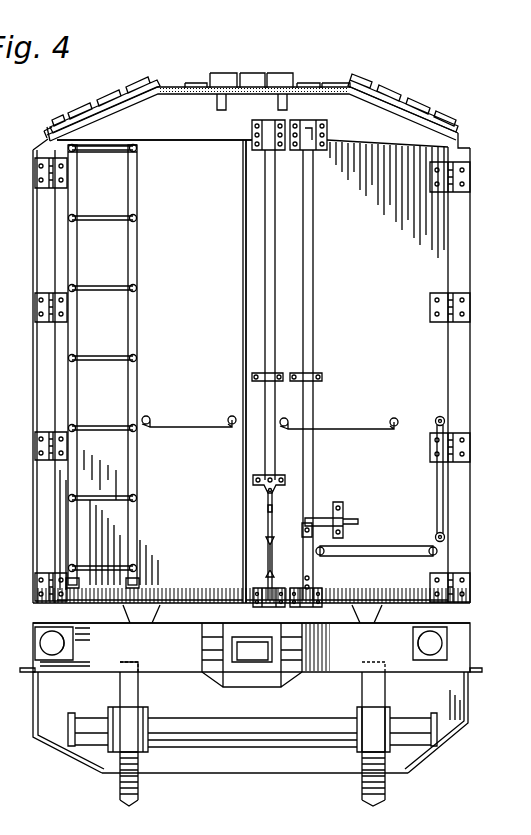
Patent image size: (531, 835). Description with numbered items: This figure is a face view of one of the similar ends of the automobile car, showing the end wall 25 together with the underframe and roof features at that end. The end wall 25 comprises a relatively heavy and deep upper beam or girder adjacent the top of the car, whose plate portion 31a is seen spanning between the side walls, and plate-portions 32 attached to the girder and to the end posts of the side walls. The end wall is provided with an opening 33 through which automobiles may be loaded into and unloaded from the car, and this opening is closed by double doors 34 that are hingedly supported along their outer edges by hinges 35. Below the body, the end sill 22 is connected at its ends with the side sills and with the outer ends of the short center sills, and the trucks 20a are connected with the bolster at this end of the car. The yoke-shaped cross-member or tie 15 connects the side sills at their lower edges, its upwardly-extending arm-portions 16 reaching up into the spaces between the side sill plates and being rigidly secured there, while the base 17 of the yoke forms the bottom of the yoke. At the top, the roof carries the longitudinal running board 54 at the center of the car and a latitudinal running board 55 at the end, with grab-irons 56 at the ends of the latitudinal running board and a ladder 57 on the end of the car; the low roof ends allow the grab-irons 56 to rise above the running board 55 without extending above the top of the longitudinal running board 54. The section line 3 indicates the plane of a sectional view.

The section line 3- 3 is at (261, 66).
The cross-members or ties 15 is at (104, 782).
The upwardly-extending arm-portions 16 is at (460, 700).
The bases of the yokes 17 is at (330, 762).
The trucks 20a is at (425, 740).
The end sills 22 is at (348, 657).
The end walls 25 is at (430, 376).
The plate portion 31a is at (323, 96).
The plate-portions 32 is at (207, 105).
The opening 33 is at (412, 140).
The double doors 34 is at (247, 371).
The hinges 35 is at (53, 177).
The longitudinal running board 54 is at (255, 75).
The latitudinal running boards 55 is at (97, 107).
The grab-irons 56 is at (67, 108).
The ladders 57 is at (140, 192).